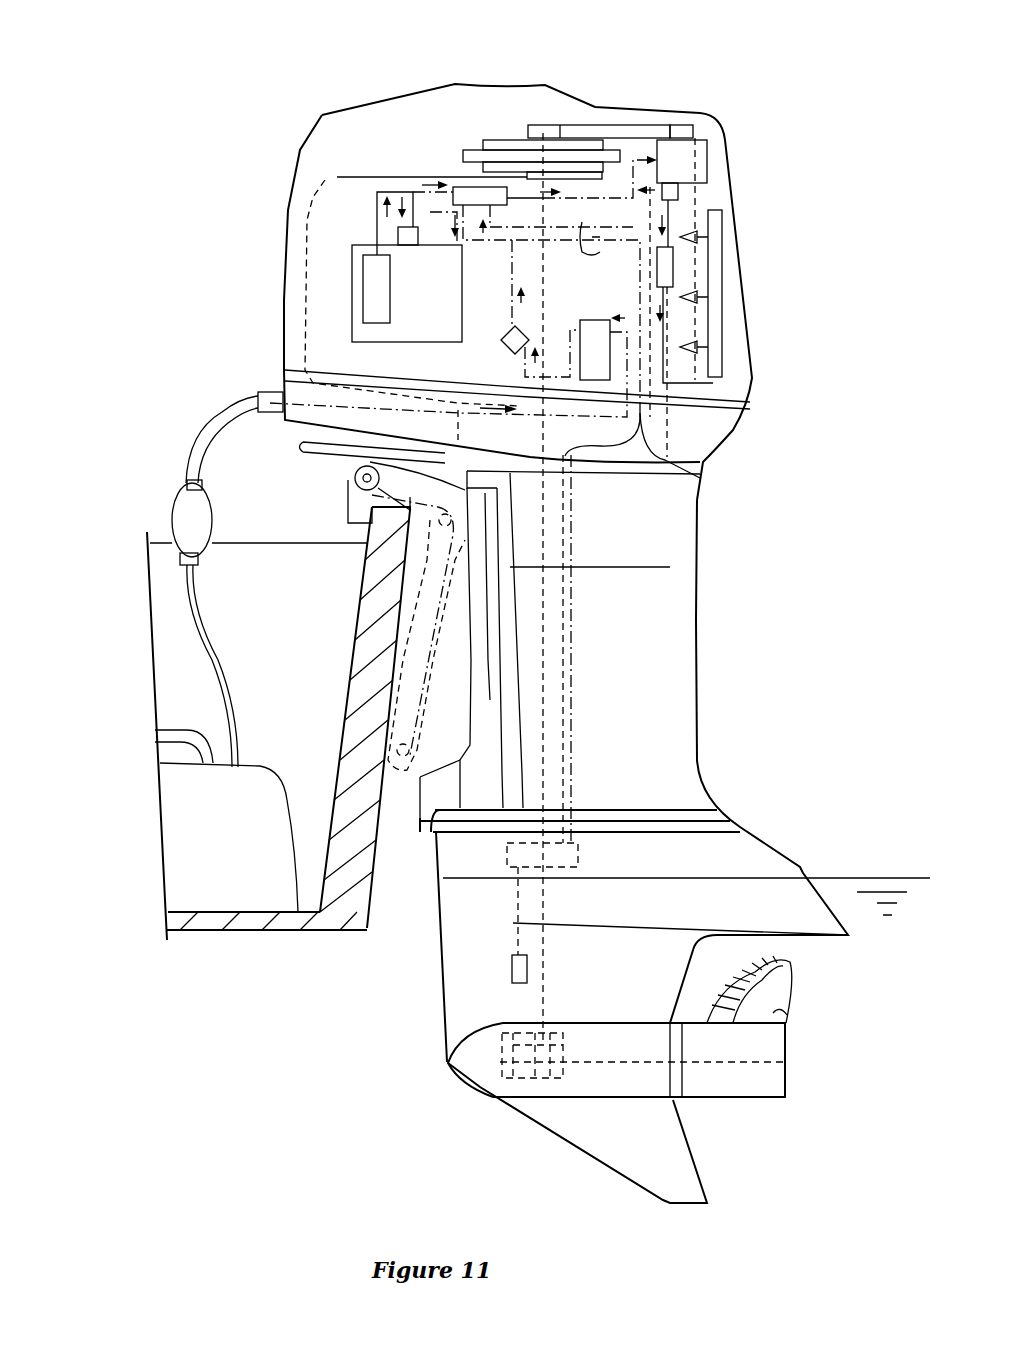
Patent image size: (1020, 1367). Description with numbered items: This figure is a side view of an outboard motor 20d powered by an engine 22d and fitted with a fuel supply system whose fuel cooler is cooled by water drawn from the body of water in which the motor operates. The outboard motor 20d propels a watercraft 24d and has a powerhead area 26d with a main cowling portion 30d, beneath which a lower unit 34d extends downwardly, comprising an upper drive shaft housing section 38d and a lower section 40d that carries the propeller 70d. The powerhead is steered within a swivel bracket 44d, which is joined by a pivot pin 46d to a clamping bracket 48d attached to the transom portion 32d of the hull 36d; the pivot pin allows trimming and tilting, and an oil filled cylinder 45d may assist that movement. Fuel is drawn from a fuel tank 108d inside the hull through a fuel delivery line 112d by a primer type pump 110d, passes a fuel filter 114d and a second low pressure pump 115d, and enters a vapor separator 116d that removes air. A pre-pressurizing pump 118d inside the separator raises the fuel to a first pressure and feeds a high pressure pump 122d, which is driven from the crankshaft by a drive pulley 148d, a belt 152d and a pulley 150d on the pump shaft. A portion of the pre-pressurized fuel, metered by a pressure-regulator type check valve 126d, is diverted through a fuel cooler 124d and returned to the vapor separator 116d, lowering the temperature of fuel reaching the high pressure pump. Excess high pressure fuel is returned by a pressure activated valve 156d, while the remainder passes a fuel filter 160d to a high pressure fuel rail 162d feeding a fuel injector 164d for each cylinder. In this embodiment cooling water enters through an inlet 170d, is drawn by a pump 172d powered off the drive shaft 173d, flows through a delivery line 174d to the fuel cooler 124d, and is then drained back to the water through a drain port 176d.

The outboard motor 20d is at (272, 189).
The engine 22d is at (334, 177).
The watercraft 24d is at (125, 568).
The powerhead area 26d is at (323, 68).
The main cowling portion 30d is at (320, 114).
The transom portion 32d is at (353, 895).
The lower unit 34d is at (697, 671).
The hull 36d is at (242, 925).
The drive shaft housing section 38d is at (673, 612).
The lower section 40d is at (765, 860).
The swivel bracket 44d is at (487, 620).
The oil filled cylinder 45d is at (395, 690).
The pivot pin 46d is at (355, 480).
The clamping bracket 48d is at (408, 590).
The propeller 70d is at (780, 1003).
The fuel tank 108d is at (177, 840).
The primer type pump 110d is at (180, 502).
The fuel delivery line 112d is at (207, 660).
The fuel filter 114d is at (600, 365).
The second low pressure pump 115d is at (515, 354).
The vapor separator 116d is at (350, 283).
The pre-pressurizing pump 118d is at (370, 305).
The high pressure pump 122d is at (700, 168).
The fuel cooler 124d is at (470, 195).
The pressure-regulator type check valve 126d is at (395, 235).
The drive pulley 148d is at (683, 127).
The pulley 150d is at (530, 128).
The belt 152d is at (625, 128).
The pressure activated valve 156d is at (715, 200).
The fuel filter 160d is at (680, 273).
The high pressure fuel rail 162d is at (715, 252).
The fuel injector 164d is at (697, 347).
The inlet 170d is at (512, 968).
The pump 172d is at (505, 855).
The drive shaft 173d is at (540, 665).
The delivery line 174d is at (570, 757).
The drain port 176d is at (700, 478).